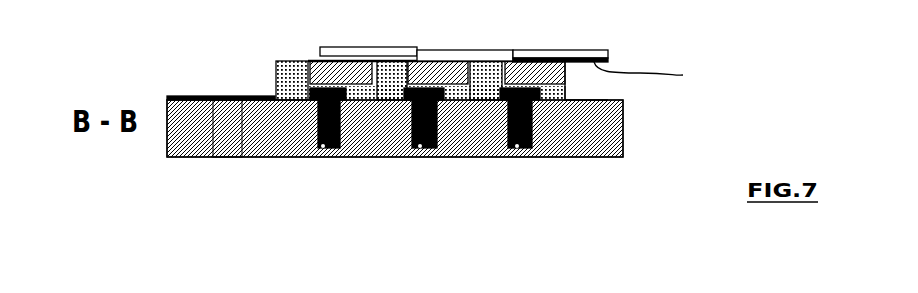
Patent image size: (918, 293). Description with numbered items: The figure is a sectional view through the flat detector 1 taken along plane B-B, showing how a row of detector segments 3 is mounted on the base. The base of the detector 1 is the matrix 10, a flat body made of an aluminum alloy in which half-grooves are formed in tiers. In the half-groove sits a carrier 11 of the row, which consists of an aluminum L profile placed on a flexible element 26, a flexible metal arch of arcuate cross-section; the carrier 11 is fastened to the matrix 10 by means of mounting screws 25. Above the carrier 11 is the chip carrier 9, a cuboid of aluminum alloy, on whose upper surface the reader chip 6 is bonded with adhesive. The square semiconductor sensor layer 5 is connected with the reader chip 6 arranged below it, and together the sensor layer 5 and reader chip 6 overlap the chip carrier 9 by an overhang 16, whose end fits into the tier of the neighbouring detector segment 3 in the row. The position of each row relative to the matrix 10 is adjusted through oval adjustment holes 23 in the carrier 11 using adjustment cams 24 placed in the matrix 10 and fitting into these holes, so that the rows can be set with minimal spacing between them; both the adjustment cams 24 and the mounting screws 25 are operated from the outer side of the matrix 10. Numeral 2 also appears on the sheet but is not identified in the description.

The detector 1 is at (140, 178).
The first plate 2 is at (397, 39).
The detector segment 3 is at (545, 38).
The sensor layer 5 is at (605, 52).
The reader chip 6 is at (649, 77).
The chip carrier 9 is at (557, 97).
The matrix 10 is at (605, 135).
The carrier 11 is at (482, 87).
The overhang 16 is at (588, 80).
The adjustment hole 23 is at (305, 98).
The adjustment cam 24 is at (322, 148).
The mounting screw 25 is at (232, 6).
The flexible element 26 is at (230, 93).